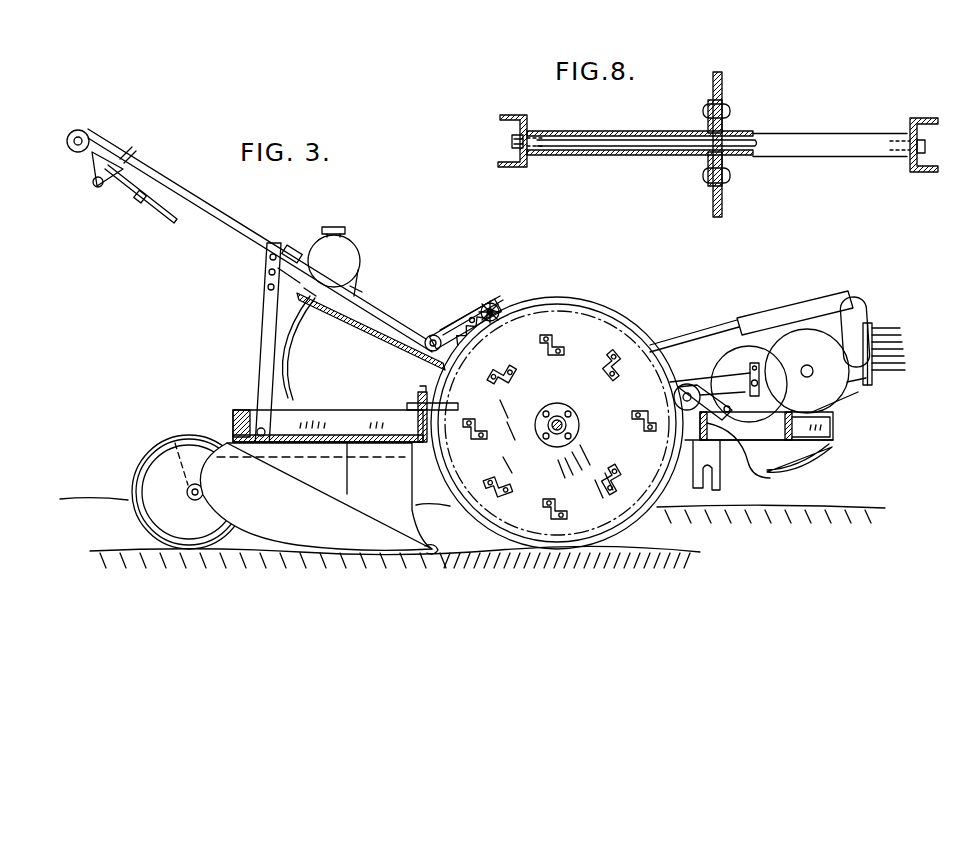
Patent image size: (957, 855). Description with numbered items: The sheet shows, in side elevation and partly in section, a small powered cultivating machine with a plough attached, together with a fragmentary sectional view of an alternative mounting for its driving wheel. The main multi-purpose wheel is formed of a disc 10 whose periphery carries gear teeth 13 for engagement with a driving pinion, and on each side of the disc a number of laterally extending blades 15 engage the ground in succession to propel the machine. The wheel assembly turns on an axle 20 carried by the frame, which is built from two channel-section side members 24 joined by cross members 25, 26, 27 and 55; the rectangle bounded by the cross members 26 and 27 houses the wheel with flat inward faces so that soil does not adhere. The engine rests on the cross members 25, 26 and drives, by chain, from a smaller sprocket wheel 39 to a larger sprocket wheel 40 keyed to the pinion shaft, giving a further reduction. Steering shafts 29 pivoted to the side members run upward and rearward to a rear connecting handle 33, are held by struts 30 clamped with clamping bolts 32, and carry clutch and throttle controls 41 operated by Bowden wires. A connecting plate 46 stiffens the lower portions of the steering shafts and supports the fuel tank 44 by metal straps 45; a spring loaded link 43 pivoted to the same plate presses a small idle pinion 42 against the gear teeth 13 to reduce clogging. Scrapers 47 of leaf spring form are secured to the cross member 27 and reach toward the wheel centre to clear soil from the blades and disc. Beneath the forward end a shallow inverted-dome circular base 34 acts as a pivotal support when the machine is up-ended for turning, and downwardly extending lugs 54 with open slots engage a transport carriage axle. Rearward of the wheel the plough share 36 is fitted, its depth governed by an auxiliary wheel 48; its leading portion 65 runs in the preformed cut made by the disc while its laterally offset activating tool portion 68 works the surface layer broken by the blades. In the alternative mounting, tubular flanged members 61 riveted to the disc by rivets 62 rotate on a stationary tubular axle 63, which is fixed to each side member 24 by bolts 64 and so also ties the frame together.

In FIG. 8, the disc 10 is at (722, 80).
In FIG. 3, the gear teeth 13 is at (513, 304).
In FIG. 3, the laterally extending blades 15 is at (597, 363).
In FIG. 3, the axle 20 is at (567, 411).
In FIG. 8, the side members 24 is at (512, 116).
In FIG. 3, the cross member 25 is at (833, 422).
In FIG. 3, the cross member 26 is at (722, 428).
In FIG. 3, the cross member 27 is at (407, 430).
In FIG. 3, the steering shafts 29 is at (203, 215).
In FIG. 3, the struts 30 is at (263, 305).
In FIG. 3, the clamping bolts 32 is at (275, 243).
In FIG. 3, the rear connecting handle 33 is at (85, 141).
In FIG. 3, the circular base 34 is at (810, 464).
In FIG. 3, the plough share 36 is at (316, 496).
In FIG. 3, the sprocket wheel 39 is at (748, 380).
In FIG. 3, the sprocket wheel 40 is at (674, 400).
In FIG. 3, the clutch and throttle controls 41 is at (128, 163).
In FIG. 3, the idle gear wheel or pinion 42 is at (484, 302).
In FIG. 3, the spring loaded link 43 is at (450, 330).
In FIG. 3, the fuel tank 44 is at (334, 257).
In FIG. 3, the metal straps 45 is at (362, 270).
In FIG. 3, the connecting plate 46 is at (377, 333).
In FIG. 3, the scrapers 47 is at (424, 403).
In FIG. 3, the auxiliary wheel 48 is at (152, 455).
In FIG. 3, the downwardly extending lugs 54 is at (717, 477).
In FIG. 3, the cross member 55 is at (240, 412).
In FIG. 8, the tubular flanged members 61 is at (650, 131).
In FIG. 8, the rivets 62 is at (727, 104).
In FIG. 8, the stationary tubular axle 63 is at (575, 140).
In FIG. 8, the bolts 64 is at (512, 142).
In FIG. 3, the leading portion 65 is at (438, 550).
In FIG. 3, the activating tool portion 68 is at (343, 520).